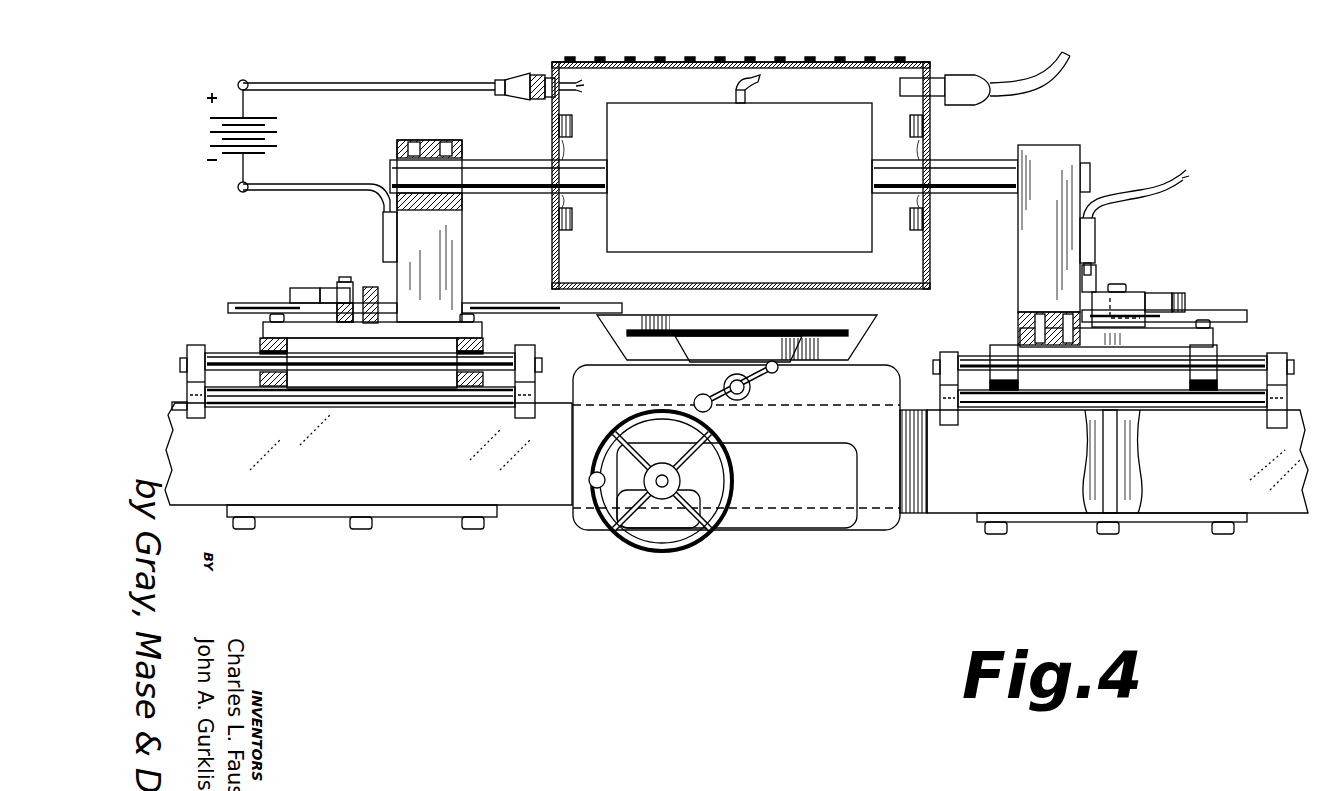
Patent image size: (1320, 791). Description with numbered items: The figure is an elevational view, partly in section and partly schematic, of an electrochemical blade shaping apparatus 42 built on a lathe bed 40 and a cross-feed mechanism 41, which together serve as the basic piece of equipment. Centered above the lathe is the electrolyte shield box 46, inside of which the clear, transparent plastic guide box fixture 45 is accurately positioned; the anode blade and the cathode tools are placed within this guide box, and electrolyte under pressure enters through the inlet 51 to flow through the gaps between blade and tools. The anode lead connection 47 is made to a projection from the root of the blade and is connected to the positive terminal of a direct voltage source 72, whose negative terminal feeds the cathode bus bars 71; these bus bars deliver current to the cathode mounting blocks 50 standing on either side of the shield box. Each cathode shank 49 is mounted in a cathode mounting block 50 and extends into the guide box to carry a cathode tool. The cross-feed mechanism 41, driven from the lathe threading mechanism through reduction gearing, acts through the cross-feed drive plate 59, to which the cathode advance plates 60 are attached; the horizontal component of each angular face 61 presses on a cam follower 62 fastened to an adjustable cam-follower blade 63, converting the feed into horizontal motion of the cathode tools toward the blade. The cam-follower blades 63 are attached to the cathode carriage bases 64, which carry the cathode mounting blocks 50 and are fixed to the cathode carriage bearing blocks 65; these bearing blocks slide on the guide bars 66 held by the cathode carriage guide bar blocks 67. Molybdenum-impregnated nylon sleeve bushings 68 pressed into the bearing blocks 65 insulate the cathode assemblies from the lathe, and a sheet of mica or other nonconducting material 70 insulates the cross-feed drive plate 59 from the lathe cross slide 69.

The lathe bed 40 is at (1155, 503).
The cross-feed mechanism 41 is at (778, 430).
The electrochemical blade shaping apparatus 42 is at (943, 138).
The guide box fixture 45 is at (691, 103).
The electrolyte shield box 46 is at (602, 60).
The anode lead connection 47 is at (572, 94).
The cathode shank 49 is at (515, 158).
The cathode mounting block 50 is at (462, 240).
The inlet 51 is at (738, 83).
The cross-feed drive plate 59 is at (258, 300).
The cathode advance plate 60 is at (310, 288).
The angular face 61 is at (320, 288).
The cam follower 62 is at (352, 282).
The adjustable cam-follower blade 63 is at (372, 285).
The cathode carriage base 64 is at (410, 330).
The cathode carriage bearing block 65 is at (255, 340).
The guide bar 66 is at (440, 375).
The cathode carriage guide bar block 67 is at (188, 375).
The molybdenum-impregnated nylon sleeve bushing 68 is at (257, 352).
The lathe cross slide 69 is at (848, 350).
The sheet of nonconducting material 70 is at (668, 335).
The cathode bus bar 71 is at (302, 195).
The direct voltage source 72 is at (210, 136).